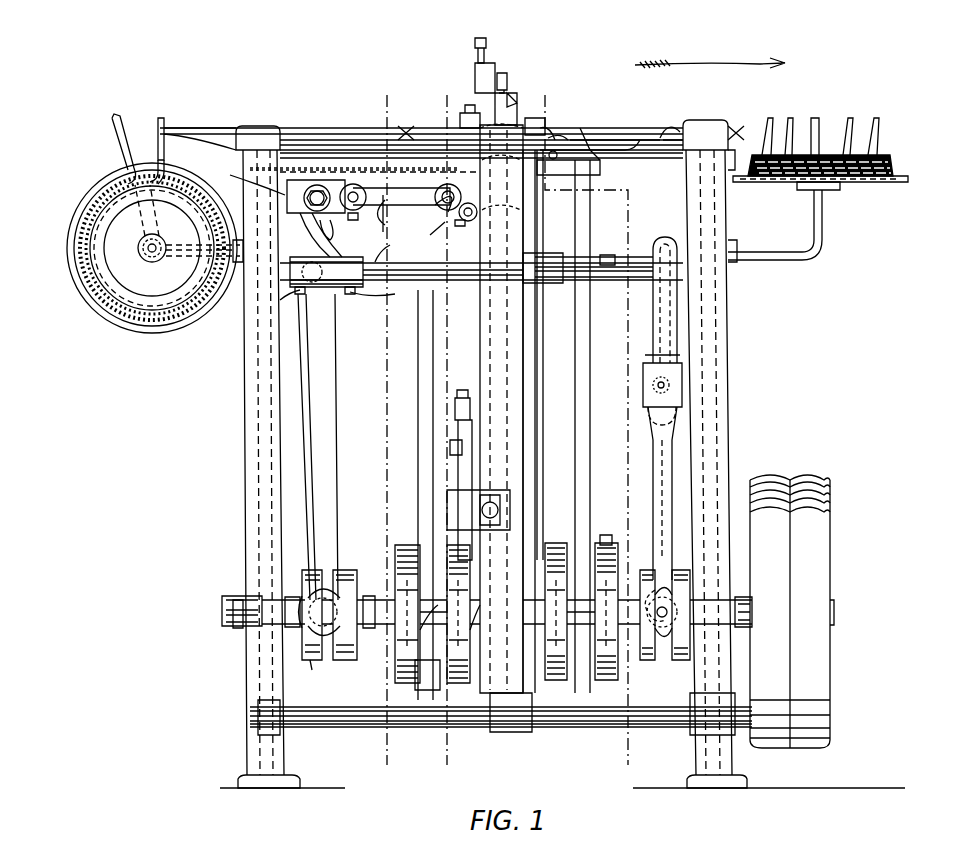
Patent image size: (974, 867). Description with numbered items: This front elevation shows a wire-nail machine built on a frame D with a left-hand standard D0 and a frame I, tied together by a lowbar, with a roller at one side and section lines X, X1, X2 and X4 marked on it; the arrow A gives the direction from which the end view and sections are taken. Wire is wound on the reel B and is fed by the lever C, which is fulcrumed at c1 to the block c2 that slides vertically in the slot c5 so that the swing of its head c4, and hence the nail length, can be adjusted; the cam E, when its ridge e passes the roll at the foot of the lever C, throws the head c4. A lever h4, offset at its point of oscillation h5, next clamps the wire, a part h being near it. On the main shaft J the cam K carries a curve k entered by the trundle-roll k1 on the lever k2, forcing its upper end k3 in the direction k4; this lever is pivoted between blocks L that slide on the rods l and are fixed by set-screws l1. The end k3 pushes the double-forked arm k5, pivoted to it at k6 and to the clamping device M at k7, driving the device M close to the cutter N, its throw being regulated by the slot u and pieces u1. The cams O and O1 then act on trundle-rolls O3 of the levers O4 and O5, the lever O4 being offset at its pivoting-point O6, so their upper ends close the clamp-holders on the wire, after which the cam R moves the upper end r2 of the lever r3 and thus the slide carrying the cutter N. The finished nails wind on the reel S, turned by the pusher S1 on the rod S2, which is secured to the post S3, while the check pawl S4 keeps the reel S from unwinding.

The arrow A is at (695, 62).
The reel B is at (895, 170).
The lever C is at (663, 468).
The frame D is at (722, 356).
The left standard post D0 is at (266, 457).
The cam E is at (648, 645).
The frame I is at (515, 330).
The main shaft J is at (362, 600).
The cam K is at (345, 568).
The blocks L is at (345, 295).
The clamping device M is at (439, 220).
The cutter N is at (480, 100).
The cam O is at (410, 620).
The cam O1 is at (455, 655).
The trundle-rolls O3 is at (405, 618).
The lever O4 is at (462, 540).
The lever O5 is at (420, 490).
The pivoting-point O6 is at (466, 222).
The cam R is at (567, 655).
The reel S is at (135, 275).
The pusher S1 is at (150, 175).
The rod S2 is at (195, 128).
The post S3 is at (590, 130).
The check pawl S4 is at (125, 150).
The section line X is at (410, 420).
The section line X1 is at (471, 421).
The section line X2 is at (591, 421).
The section line X4 is at (571, 124).
The fulcrum c1 is at (608, 170).
The block c2 is at (645, 388).
The head c4 is at (668, 125).
The slot c5 is at (640, 352).
The ridge e is at (633, 590).
The collar h is at (600, 545).
The lever h4 is at (590, 392).
The point of oscillation h5 is at (590, 258).
The curve k is at (312, 662).
The trundle-roll k1 is at (305, 632).
The lever k2 is at (325, 470).
The upper end k3 is at (298, 178).
The direction k4 is at (395, 168).
The double-forked arm k5 is at (388, 226).
The pivot k6 is at (378, 198).
The pivot k7 is at (445, 190).
The rods l is at (382, 256).
The set-screws l1 is at (292, 310).
The upper end r2 is at (548, 122).
The lever r3 is at (540, 466).
The slot u is at (320, 235).
The pieces u1 is at (232, 175).
The lower cross bar lowbar is at (501, 714).
The element roller is at (792, 611).